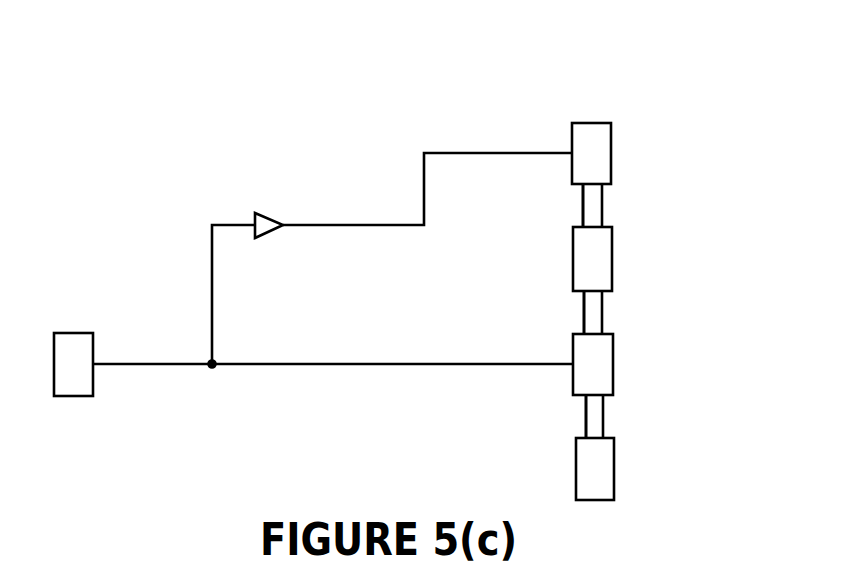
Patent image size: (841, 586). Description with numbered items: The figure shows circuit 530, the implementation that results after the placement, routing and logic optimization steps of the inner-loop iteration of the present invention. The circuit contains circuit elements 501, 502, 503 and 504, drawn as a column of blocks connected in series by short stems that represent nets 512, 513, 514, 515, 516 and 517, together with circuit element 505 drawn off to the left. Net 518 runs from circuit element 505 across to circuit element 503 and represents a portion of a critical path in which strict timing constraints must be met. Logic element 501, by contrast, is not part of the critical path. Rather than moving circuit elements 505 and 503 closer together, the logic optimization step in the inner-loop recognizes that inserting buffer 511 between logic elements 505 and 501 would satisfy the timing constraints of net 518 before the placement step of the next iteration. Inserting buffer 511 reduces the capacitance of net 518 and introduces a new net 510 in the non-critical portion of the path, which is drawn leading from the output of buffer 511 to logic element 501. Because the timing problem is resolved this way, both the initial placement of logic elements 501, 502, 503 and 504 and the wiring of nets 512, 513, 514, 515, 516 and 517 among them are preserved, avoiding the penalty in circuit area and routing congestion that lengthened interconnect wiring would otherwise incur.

The circuit 530 is at (588, 72).
The logic element 501 is at (612, 145).
The circuit element 502 is at (613, 257).
The circuit element 503 is at (614, 367).
The circuit element 504 is at (615, 470).
The circuit element 505 is at (73, 330).
The net 510 is at (490, 150).
The buffer 511 is at (275, 212).
The net 512 is at (602, 201).
The net 513 is at (582, 201).
The net 514 is at (583, 306).
The net 515 is at (603, 307).
The net 516 is at (605, 414).
The net 517 is at (586, 414).
The net 518 is at (304, 366).